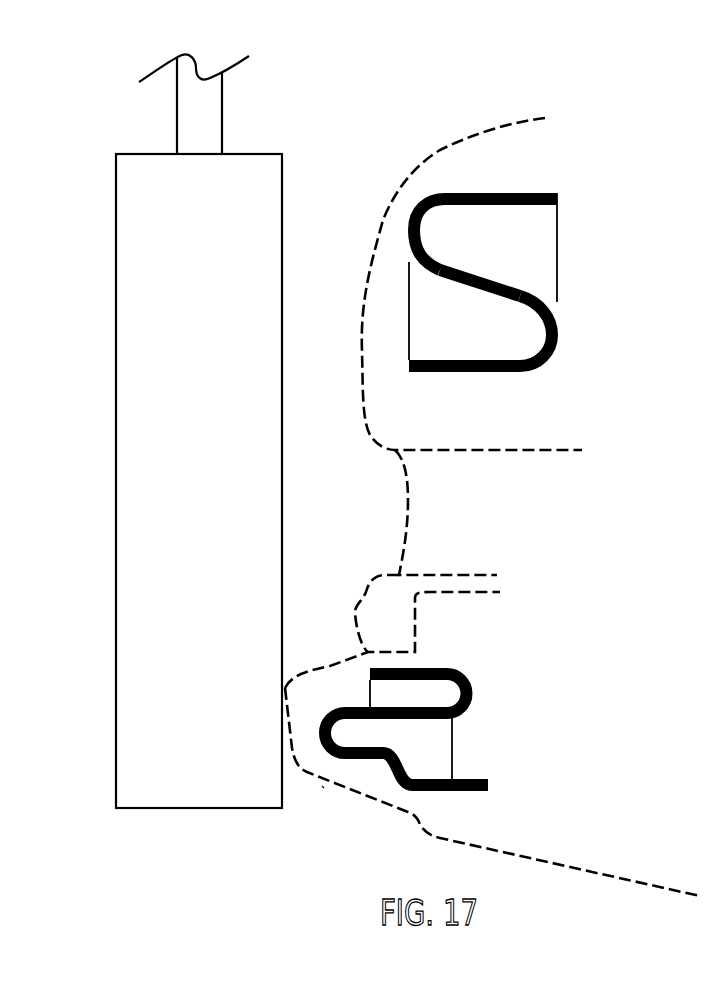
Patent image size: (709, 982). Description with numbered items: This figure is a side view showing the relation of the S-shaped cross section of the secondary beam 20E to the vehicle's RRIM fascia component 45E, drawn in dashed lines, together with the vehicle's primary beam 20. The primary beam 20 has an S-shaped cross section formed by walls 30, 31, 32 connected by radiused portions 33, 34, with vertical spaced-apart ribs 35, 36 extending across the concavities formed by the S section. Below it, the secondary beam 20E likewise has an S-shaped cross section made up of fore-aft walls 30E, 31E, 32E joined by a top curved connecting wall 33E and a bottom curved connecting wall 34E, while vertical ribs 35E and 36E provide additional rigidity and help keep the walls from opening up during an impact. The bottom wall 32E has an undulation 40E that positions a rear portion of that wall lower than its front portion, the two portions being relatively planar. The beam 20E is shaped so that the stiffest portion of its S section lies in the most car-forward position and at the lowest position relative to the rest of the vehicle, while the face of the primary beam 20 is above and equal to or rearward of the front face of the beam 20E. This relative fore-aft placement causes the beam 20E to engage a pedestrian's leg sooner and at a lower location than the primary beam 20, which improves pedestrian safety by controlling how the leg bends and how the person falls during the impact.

The beam 20 is at (563, 161).
The wall 30 is at (497, 193).
The wall 31 is at (508, 290).
The wall 32 is at (480, 373).
The radiused portion 33 is at (410, 231).
The radiused portion 34 is at (560, 335).
The rib 35 is at (559, 222).
The rib 36 is at (408, 318).
The beam 20E is at (497, 653).
The fore-aft wall 30E is at (428, 669).
The fore-aft wall 31E is at (410, 720).
The bottom wall 32E is at (445, 792).
The top curved connecting wall 33E is at (470, 695).
The bottom curved connecting wall 34E is at (322, 748).
The vertical rib 35E is at (365, 691).
The vertical rib 36E is at (455, 748).
The undulation 40E is at (383, 758).
The RRIM fascia component 45E is at (323, 787).